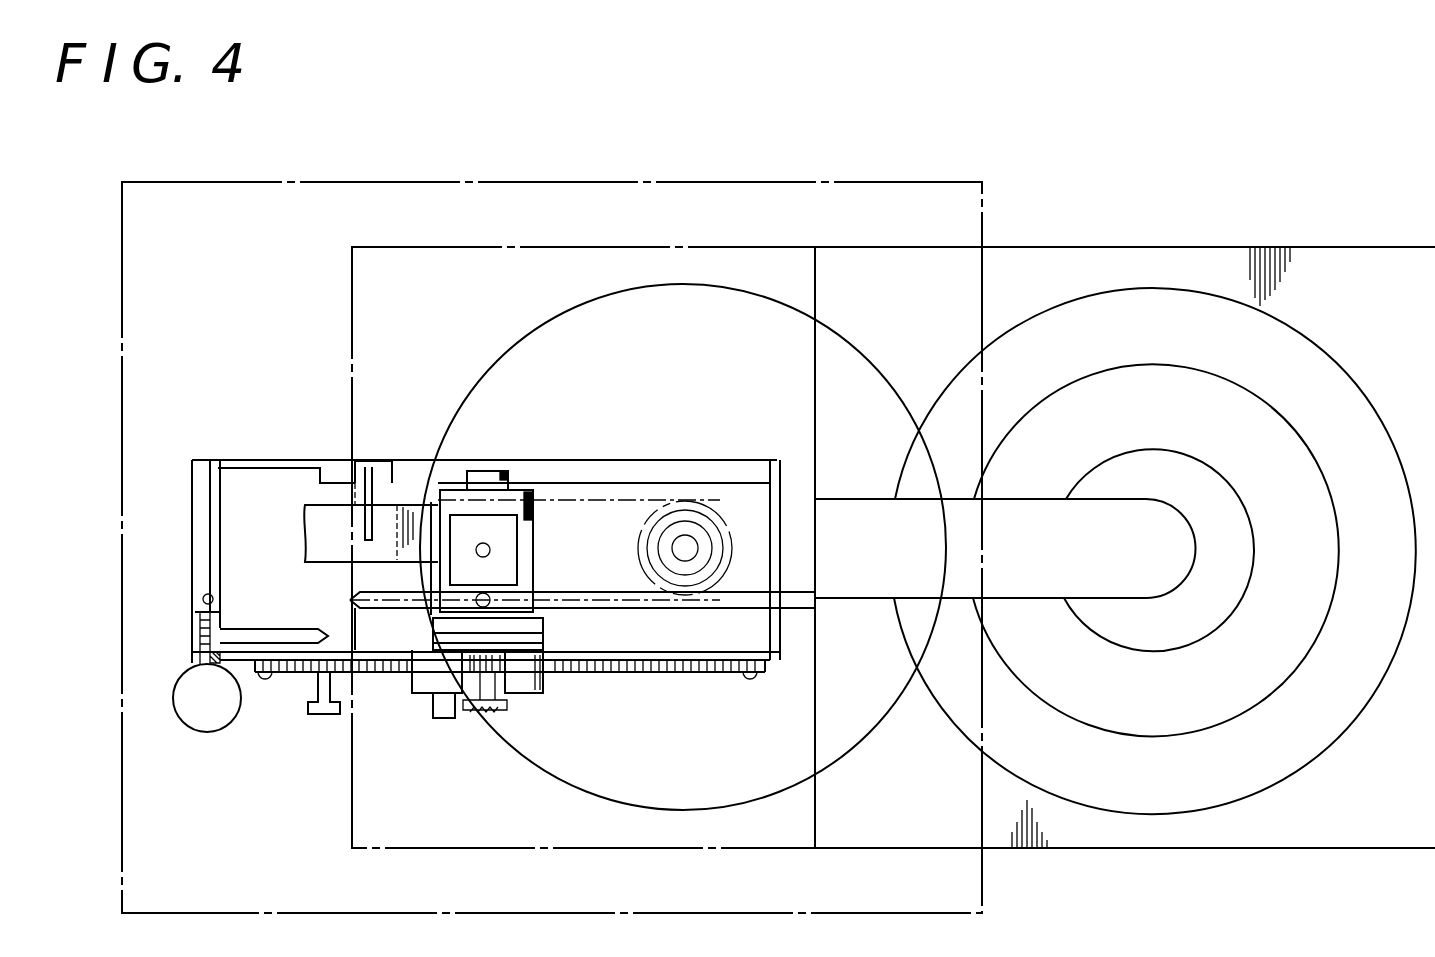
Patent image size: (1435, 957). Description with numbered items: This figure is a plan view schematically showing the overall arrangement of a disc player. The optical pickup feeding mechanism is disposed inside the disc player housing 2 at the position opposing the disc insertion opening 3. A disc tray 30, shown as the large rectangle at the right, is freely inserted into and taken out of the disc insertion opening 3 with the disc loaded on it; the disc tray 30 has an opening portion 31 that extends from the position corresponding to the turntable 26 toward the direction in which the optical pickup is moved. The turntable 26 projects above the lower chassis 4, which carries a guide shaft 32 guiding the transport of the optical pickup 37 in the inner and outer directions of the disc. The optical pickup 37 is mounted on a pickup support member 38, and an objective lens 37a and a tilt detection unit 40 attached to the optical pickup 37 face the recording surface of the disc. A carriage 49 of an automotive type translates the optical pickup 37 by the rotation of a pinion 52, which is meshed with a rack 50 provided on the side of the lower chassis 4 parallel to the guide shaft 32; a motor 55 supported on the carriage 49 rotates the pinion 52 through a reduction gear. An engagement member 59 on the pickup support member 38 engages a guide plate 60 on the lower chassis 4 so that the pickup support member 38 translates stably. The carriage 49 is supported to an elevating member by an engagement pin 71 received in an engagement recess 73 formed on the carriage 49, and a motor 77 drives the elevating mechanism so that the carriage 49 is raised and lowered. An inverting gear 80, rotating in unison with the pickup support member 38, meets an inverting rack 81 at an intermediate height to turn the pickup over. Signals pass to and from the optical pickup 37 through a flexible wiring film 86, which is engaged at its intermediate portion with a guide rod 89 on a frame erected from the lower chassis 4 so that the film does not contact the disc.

The disc player housing 2 is at (748, 182).
The disc insertion opening 3 is at (970, 247).
The lower chassis 4 is at (636, 460).
The turntable 26 is at (692, 520).
The disc tray 30 is at (560, 247).
The opening portion 31 is at (1026, 500).
The guide shaft 32 is at (660, 608).
The optical pickup 37 is at (505, 520).
The objective lens 37a is at (491, 550).
The pickup support member 38 is at (532, 512).
The tilt detection unit 40 is at (491, 598).
The carriage 49 is at (548, 642).
The rack 50 is at (592, 672).
The pinion 52 is at (520, 665).
The motor 55 is at (415, 690).
The engagement member 59 is at (485, 485).
The guide plate 60 is at (678, 470).
The engagement pin 71 is at (290, 643).
The engagement recess 73 is at (545, 690).
The motor 77 is at (207, 720).
The inverting gear 80 is at (468, 710).
The inverting rack 81 is at (325, 714).
The flexible wiring film 86 is at (318, 537).
The guide rod 89 is at (383, 520).